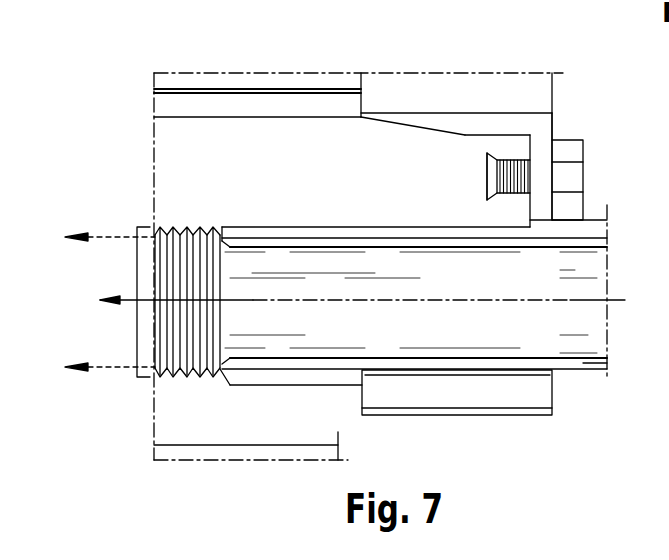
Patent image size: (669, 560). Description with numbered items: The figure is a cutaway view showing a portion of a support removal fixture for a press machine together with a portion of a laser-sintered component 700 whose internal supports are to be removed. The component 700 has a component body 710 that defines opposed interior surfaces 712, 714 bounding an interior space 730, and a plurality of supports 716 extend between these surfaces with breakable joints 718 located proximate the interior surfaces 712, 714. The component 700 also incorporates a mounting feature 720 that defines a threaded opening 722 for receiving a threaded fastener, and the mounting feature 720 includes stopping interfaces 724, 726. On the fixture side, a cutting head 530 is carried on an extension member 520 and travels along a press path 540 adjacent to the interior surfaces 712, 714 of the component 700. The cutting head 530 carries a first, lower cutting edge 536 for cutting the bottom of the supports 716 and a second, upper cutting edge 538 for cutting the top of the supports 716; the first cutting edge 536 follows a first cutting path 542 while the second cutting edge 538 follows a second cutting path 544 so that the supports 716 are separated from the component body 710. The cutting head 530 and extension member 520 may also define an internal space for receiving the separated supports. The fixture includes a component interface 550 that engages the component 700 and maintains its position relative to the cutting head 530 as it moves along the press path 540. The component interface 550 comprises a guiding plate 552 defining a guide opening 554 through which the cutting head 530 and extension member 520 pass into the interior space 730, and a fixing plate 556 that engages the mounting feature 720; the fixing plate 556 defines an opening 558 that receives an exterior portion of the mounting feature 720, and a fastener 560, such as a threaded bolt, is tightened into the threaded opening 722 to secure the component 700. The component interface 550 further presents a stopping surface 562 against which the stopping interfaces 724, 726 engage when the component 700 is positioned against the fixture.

The laser-sintered component 700 is at (133, 153).
The component body 710 is at (158, 198).
The interior surface 712 is at (273, 227).
The interior surface 714 is at (253, 386).
The supports 716 is at (218, 380).
The breakable joints 718 is at (158, 227).
The mounting feature 720 is at (530, 157).
The threaded opening 722 is at (493, 197).
The stopping interface 724 is at (352, 397).
The stopping interface 726 is at (360, 87).
The interior space 730 is at (137, 282).
The extension member 520 is at (583, 363).
The cutting head 530 is at (292, 246).
The first cutting edge 536 is at (219, 383).
The second cutting edge 538 is at (222, 228).
The press path 540 is at (615, 287).
The first cutting path 542 is at (103, 363).
The direction 544 is at (103, 240).
The component interface 550 is at (400, 72).
The guiding plate 552 is at (530, 417).
The guide opening 554 is at (552, 372).
The fixing plate 556 is at (553, 120).
The opening 558 is at (488, 135).
The fastener 560 is at (573, 173).
The stopping surface 562 is at (360, 98).